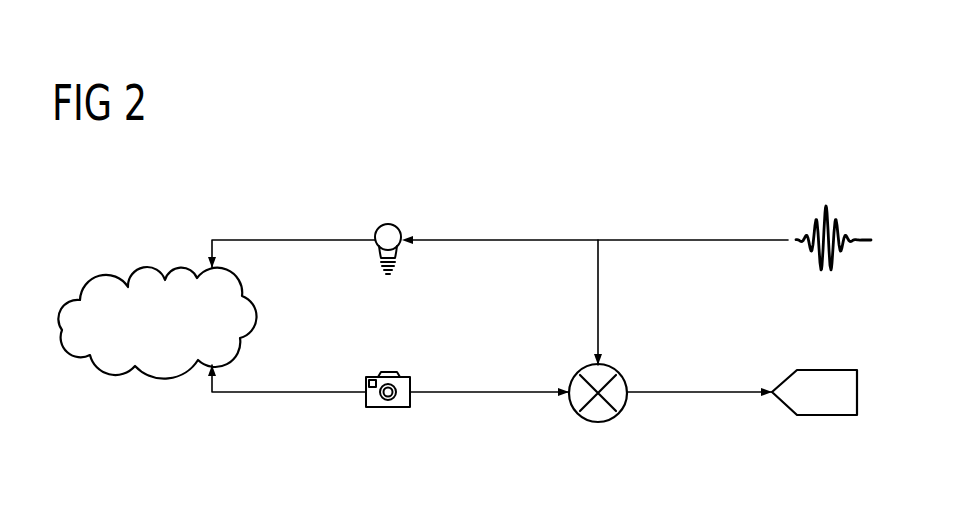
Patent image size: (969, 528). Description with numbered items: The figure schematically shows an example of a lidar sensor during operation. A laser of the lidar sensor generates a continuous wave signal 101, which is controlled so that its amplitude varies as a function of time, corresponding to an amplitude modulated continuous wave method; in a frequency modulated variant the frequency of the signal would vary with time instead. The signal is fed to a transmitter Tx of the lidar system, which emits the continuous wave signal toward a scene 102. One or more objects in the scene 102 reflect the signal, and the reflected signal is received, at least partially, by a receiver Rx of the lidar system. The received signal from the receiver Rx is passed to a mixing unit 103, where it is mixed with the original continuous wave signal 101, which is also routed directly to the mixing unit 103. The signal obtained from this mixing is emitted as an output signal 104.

The continuous wave signal 101 is at (823, 202).
The scene 102 is at (141, 272).
The mixing unit 103 is at (598, 424).
The output signal 104 is at (828, 418).
The transmitter Tx is at (388, 226).
The receiver Rx is at (388, 409).